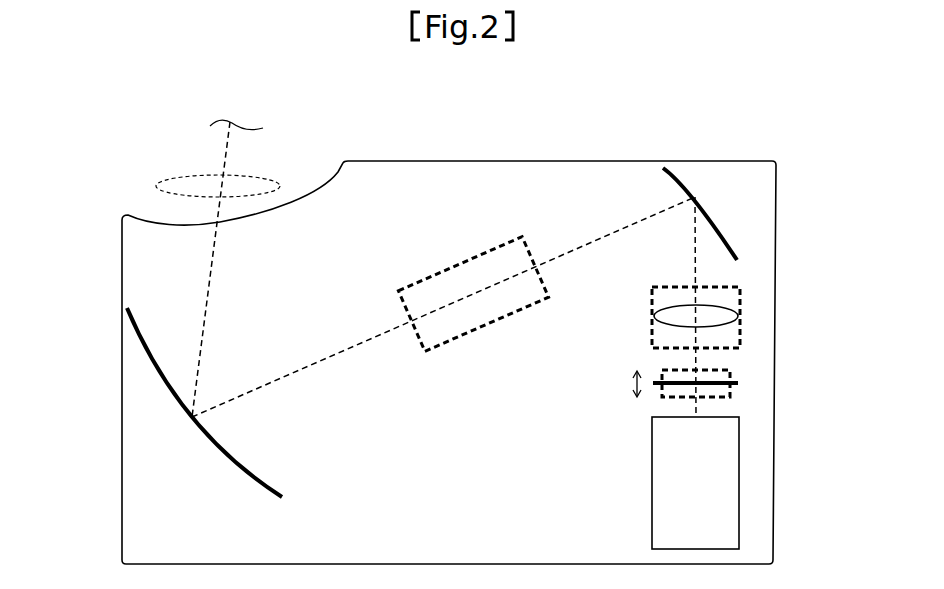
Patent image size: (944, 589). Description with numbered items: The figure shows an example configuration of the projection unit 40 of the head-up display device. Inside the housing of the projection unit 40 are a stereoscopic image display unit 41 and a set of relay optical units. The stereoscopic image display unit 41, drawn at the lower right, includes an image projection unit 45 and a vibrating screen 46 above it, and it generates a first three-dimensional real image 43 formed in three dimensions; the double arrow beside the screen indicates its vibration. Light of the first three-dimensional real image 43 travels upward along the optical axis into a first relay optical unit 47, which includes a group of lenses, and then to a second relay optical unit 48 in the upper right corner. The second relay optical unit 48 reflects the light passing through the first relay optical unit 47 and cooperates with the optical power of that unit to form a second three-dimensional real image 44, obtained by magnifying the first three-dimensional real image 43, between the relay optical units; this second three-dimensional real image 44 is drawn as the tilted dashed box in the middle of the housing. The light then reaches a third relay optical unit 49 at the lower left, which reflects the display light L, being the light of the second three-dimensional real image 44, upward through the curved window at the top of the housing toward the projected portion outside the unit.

The projection unit 40 is at (677, 130).
The display light L is at (282, 180).
The stereoscopic image display unit 41 is at (826, 402).
The first 3D real image 43 is at (730, 367).
The second 3D real image 44 is at (473, 275).
The image projection unit 45 is at (728, 490).
The vibrating screen 46 is at (738, 387).
The first relay optical unit 47 is at (732, 300).
The second relay optical unit 48 is at (735, 238).
The third relay optical unit 49 is at (145, 353).